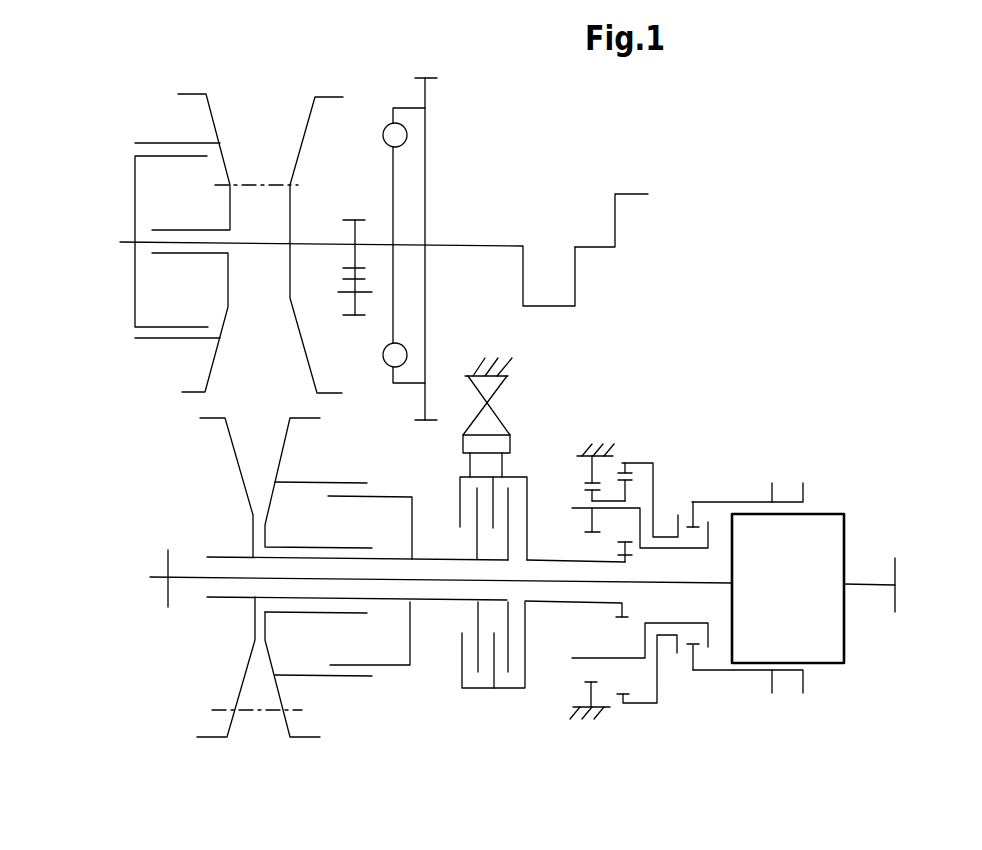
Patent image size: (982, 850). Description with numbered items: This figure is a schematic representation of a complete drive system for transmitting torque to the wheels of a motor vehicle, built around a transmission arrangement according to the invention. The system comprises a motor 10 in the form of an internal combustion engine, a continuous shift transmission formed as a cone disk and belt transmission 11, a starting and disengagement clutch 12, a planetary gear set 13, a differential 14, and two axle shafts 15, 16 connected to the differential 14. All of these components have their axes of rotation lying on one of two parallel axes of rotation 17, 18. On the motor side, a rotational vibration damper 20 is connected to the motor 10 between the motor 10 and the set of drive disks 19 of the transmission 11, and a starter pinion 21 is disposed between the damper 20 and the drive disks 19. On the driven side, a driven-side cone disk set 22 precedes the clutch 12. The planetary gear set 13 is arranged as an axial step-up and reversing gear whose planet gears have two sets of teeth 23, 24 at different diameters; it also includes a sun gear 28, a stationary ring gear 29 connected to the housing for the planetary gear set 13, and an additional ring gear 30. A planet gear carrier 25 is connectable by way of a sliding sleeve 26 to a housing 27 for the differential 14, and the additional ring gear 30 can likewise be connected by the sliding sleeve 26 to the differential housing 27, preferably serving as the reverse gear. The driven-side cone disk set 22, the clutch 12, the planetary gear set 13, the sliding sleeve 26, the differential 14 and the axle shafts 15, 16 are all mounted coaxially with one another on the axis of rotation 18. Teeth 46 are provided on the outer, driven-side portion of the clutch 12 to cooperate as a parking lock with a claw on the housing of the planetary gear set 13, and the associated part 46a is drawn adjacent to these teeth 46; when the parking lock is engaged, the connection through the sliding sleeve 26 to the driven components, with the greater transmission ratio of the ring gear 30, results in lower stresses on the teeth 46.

The motor 10 is at (596, 212).
The cone disk and belt transmission 11 is at (255, 86).
The starting and disengagement clutch 12 is at (493, 724).
The planetary gear set 13 is at (690, 446).
The differential 14 is at (795, 603).
The axle shaft 15 is at (192, 590).
The axle shaft 16 is at (863, 583).
The axis of rotation 17 is at (110, 242).
The axis of rotation 18 is at (138, 577).
The drive disks 19 is at (303, 133).
The rotational vibration damper 20 is at (413, 172).
The starter pinion 21 is at (357, 218).
The driven-side cone disk set 22 is at (278, 693).
The set of teeth 23 is at (582, 500).
The set of teeth 24 is at (627, 500).
The planet gear carrier 25 is at (640, 508).
The sliding sleeve 26 is at (753, 502).
The housing for the differential 27 is at (815, 512).
The sun gear 28 is at (625, 562).
The stationary ring gear 29 is at (587, 472).
The additional ring gear 30 is at (626, 462).
The teeth 46 is at (468, 465).
The clutch actuator 46a is at (498, 386).